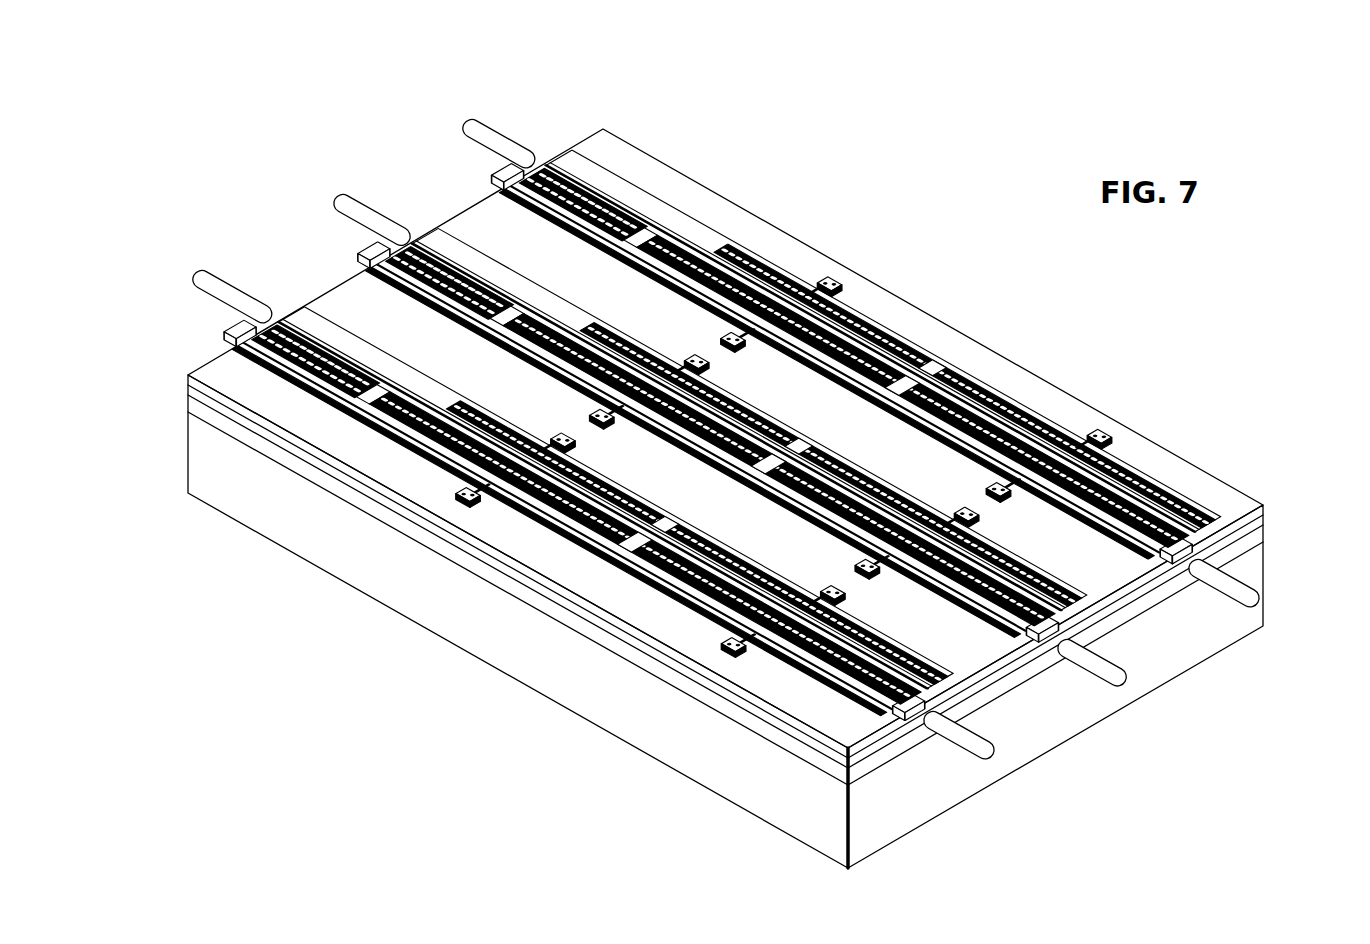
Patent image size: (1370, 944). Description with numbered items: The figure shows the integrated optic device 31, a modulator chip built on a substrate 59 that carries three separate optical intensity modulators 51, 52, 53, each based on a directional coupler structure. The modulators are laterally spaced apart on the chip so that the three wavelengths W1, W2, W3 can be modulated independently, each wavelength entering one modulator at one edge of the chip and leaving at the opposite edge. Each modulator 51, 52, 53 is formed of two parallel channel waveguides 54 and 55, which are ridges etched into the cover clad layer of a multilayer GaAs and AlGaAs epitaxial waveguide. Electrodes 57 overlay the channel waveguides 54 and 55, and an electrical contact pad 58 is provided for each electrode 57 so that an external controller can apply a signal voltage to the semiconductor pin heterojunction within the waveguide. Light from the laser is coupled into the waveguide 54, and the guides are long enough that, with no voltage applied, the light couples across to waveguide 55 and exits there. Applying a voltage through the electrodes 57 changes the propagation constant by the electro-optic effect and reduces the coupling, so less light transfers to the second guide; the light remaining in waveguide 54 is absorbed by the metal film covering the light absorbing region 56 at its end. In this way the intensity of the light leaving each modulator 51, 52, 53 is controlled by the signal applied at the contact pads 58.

The integrated optic device 31 is at (724, 498).
The optical intensity modulator 51 is at (808, 658).
The optical intensity modulator 52 is at (975, 603).
The optical intensity modulator 53 is at (1110, 533).
The channel waveguide 54 is at (892, 398).
The channel waveguide 55 is at (936, 389).
The light absorbing region 56 is at (302, 371).
The electrode 57 is at (465, 417).
The electrical contact pad 58 is at (580, 450).
The substrate 59 is at (935, 795).
The wavelength W1 is at (83, 200).
The wavelength W2 is at (227, 133).
The wavelength W3 is at (355, 58).